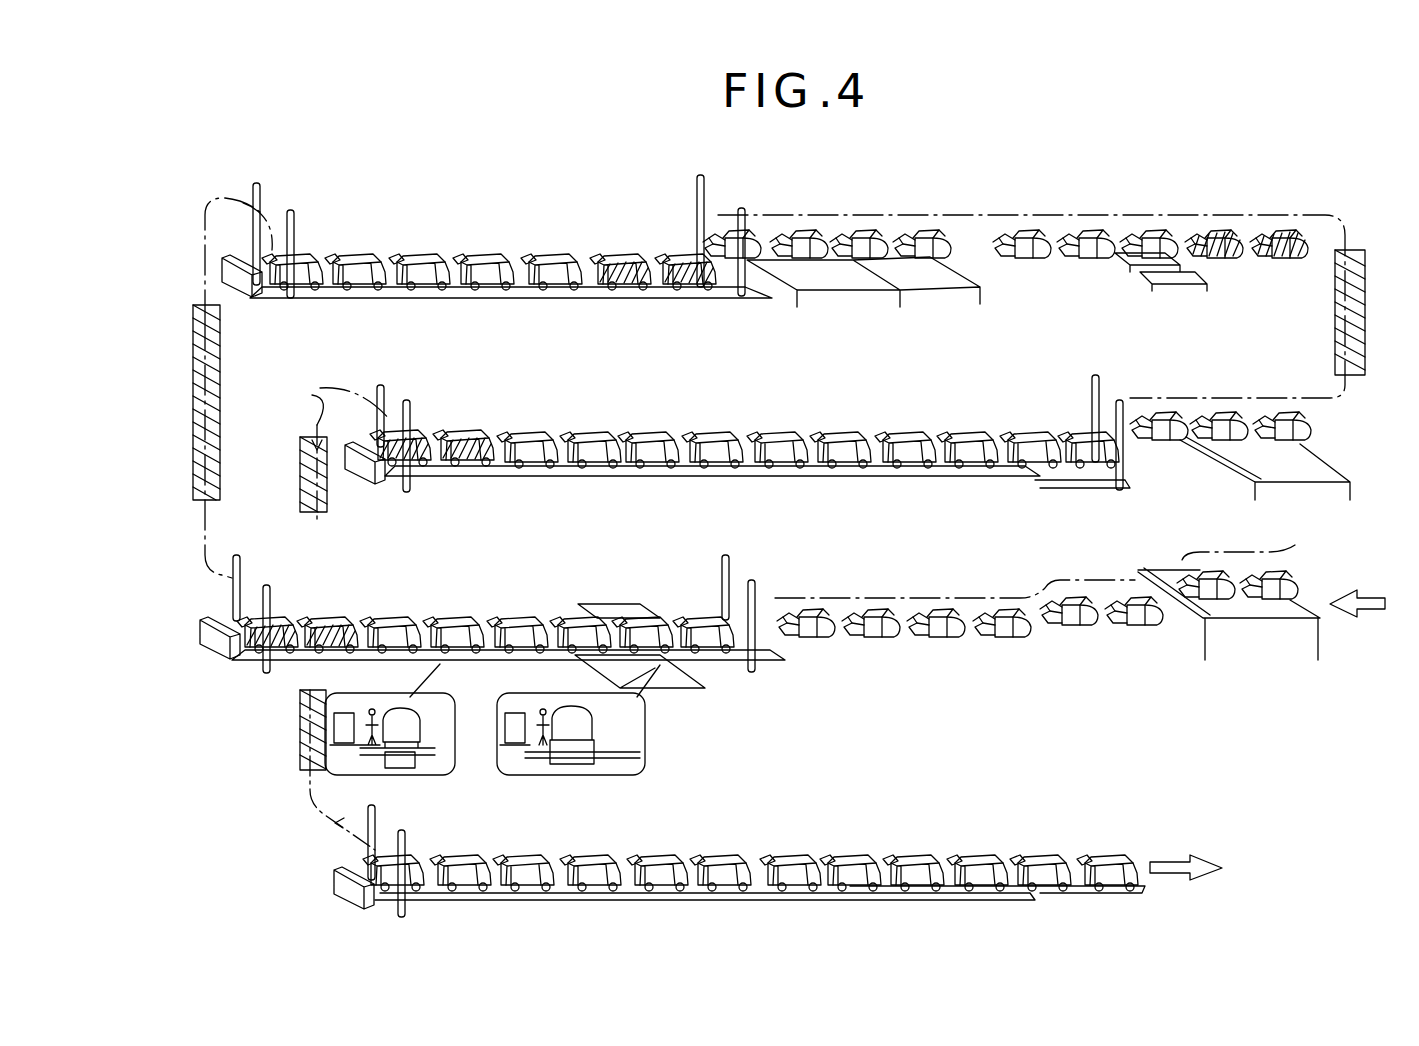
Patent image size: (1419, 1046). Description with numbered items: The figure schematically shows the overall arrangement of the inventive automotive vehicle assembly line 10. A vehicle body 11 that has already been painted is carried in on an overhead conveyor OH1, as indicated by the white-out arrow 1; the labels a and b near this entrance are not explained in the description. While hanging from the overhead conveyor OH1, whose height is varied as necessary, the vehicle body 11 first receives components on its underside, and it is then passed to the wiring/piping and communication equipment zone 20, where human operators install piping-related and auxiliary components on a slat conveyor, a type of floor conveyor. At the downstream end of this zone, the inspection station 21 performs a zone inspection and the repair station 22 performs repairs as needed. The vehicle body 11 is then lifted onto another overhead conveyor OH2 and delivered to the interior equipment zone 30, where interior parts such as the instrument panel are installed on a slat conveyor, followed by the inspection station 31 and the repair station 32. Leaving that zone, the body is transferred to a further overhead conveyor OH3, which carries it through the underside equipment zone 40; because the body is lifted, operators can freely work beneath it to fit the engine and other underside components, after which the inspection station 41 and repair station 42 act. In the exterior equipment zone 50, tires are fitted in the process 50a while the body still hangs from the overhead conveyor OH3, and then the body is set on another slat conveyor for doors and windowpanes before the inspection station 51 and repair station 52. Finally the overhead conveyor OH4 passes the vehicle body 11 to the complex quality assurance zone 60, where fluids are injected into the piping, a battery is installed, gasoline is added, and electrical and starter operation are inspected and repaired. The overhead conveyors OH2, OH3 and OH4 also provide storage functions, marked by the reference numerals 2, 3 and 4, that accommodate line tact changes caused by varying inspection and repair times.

The assembly line 10 is at (1281, 756).
The vehicle body 11 is at (727, 220).
The wiring/piping and communication equipment zone 20 is at (265, 541).
The inspection station 21 is at (342, 650).
The repair station 22 is at (278, 668).
The interior equipment zone 30 is at (305, 200).
The inspection station 31 is at (618, 292).
The repair station 32 is at (684, 292).
The underside equipment zone 40 is at (1313, 198).
The inspection station 41 is at (1218, 260).
The repair station 42 is at (1283, 260).
The exterior equipment zone 50 is at (440, 397).
The tire installation process 50a is at (1290, 430).
The inspection station 51 is at (470, 440).
The repair station 52 is at (425, 440).
The complex quality assurance zone 60 is at (1073, 832).
The vehicle body a is at (1272, 600).
The vehicle body b is at (1208, 600).
The overhead conveyor OH1 is at (890, 598).
The overhead conveyor OH2 is at (206, 351).
The overhead conveyor OH3 is at (930, 213).
The overhead conveyor OH4 is at (316, 446).
The white-out arrow 1 is at (1357, 615).
The storage function 2 is at (196, 422).
The storage function 3 is at (1360, 292).
The storage function 4 is at (300, 757).